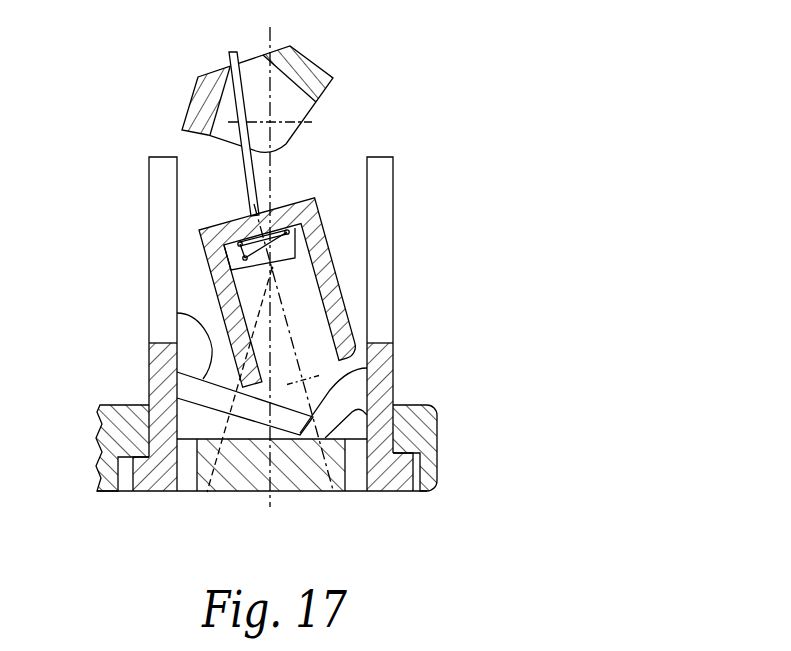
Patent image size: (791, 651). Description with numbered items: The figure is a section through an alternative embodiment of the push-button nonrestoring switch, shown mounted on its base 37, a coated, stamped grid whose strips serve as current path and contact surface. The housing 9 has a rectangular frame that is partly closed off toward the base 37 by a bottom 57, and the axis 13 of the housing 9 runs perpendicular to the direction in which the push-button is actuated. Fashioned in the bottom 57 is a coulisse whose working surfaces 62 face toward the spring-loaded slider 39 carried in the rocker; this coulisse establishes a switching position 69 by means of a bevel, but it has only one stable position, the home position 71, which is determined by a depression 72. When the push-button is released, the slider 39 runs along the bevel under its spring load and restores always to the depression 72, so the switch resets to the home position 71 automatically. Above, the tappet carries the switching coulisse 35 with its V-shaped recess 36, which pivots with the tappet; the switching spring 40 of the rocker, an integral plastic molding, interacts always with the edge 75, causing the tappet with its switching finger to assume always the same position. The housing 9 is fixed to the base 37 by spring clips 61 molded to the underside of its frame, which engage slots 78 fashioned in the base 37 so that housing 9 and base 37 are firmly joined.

The housing 9 is at (395, 322).
The axis 13 is at (270, 175).
The switching coulisse 35 is at (300, 140).
The V-shaped recess 36 is at (294, 100).
The base 37 is at (437, 452).
The slider 39 is at (367, 368).
The switching spring 40 is at (245, 168).
The bottom 57 is at (217, 397).
The spring clips 61 is at (145, 477).
The working surfaces 62 is at (177, 313).
The switching position 69 is at (203, 492).
The home position 71 is at (333, 490).
The depression 72 is at (290, 491).
The edge 75 is at (230, 70).
The slots 78 is at (411, 489).